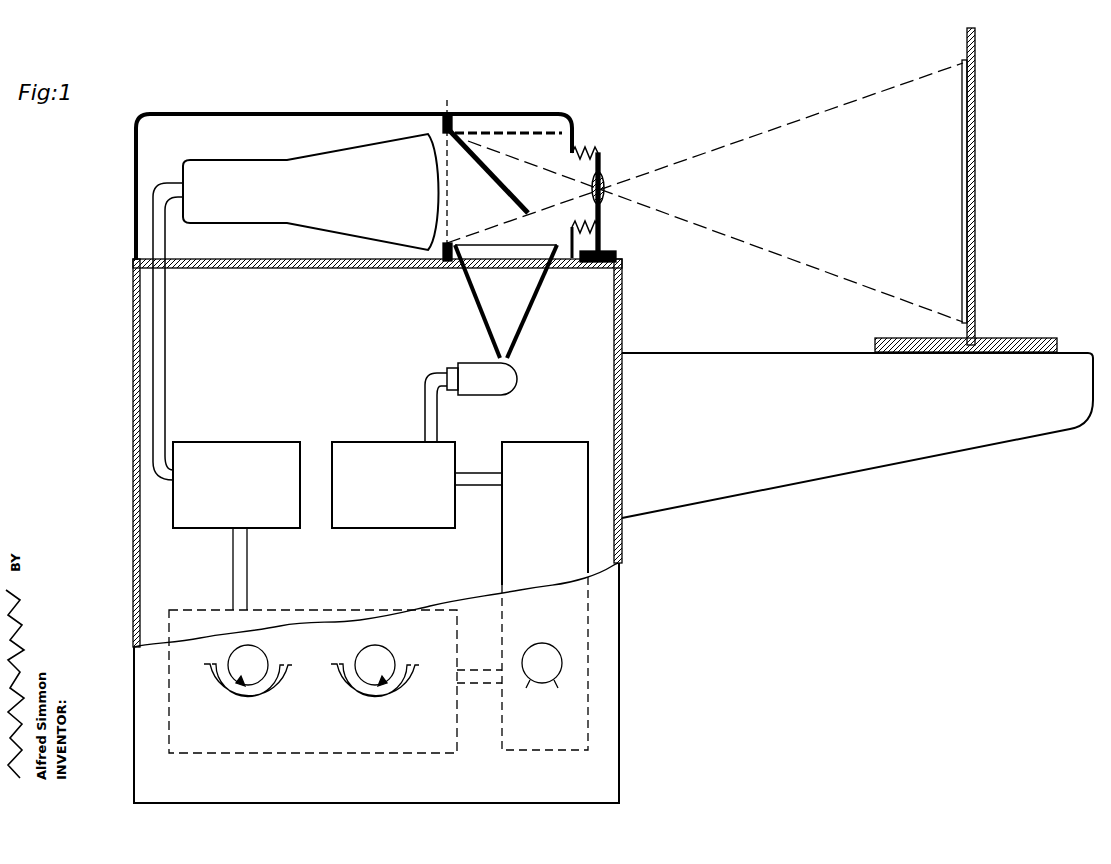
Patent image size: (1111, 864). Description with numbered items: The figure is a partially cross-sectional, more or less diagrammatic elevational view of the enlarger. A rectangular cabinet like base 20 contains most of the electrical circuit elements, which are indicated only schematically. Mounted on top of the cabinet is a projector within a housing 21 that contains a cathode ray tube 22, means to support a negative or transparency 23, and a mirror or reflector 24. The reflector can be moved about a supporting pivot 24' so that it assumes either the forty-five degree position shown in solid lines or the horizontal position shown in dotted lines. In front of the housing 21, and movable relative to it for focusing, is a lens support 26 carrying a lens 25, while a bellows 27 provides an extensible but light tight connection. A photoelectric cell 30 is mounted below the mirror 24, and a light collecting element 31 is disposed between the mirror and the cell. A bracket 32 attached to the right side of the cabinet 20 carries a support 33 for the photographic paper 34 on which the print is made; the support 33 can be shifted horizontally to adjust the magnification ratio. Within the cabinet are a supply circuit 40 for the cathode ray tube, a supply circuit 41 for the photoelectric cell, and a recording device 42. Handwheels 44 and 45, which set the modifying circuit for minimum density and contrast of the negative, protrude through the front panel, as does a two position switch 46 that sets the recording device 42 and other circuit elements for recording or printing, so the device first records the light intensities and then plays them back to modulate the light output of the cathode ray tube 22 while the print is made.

The cabinet like base 20 is at (134, 293).
The housing 21 is at (263, 113).
The cathode ray tube 22 is at (233, 165).
The means to support a negative or transparency 23 is at (449, 103).
The mirror or reflector 24 is at (494, 172).
The supporting pivot 24' is at (508, 124).
The lens 25 is at (603, 181).
The lens support 26 is at (603, 156).
The bellows 27 is at (580, 150).
The photoelectric cell 30 is at (512, 374).
The light collecting element 31 is at (540, 296).
The bracket 32 is at (730, 352).
The support 33 is at (976, 280).
The photographic paper 34 is at (962, 240).
The supply circuit for the cathode ray tube 40 is at (236, 526).
The supply circuit for the photoelectric cell 41 is at (417, 485).
The recording device 42 is at (522, 596).
The handwheel 44 is at (373, 651).
The handwheel 45 is at (254, 651).
The two position switch 46 is at (538, 648).